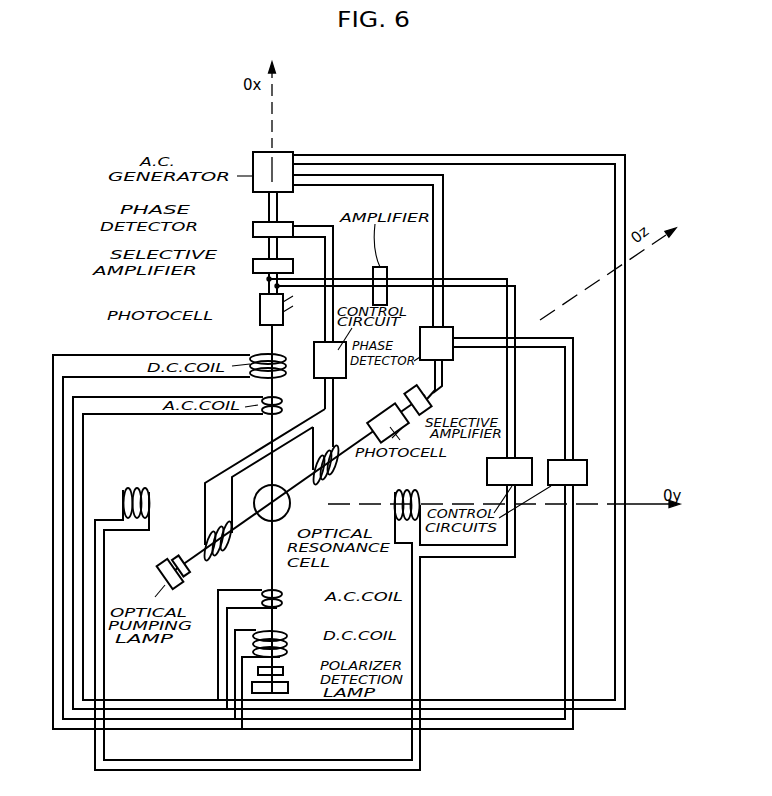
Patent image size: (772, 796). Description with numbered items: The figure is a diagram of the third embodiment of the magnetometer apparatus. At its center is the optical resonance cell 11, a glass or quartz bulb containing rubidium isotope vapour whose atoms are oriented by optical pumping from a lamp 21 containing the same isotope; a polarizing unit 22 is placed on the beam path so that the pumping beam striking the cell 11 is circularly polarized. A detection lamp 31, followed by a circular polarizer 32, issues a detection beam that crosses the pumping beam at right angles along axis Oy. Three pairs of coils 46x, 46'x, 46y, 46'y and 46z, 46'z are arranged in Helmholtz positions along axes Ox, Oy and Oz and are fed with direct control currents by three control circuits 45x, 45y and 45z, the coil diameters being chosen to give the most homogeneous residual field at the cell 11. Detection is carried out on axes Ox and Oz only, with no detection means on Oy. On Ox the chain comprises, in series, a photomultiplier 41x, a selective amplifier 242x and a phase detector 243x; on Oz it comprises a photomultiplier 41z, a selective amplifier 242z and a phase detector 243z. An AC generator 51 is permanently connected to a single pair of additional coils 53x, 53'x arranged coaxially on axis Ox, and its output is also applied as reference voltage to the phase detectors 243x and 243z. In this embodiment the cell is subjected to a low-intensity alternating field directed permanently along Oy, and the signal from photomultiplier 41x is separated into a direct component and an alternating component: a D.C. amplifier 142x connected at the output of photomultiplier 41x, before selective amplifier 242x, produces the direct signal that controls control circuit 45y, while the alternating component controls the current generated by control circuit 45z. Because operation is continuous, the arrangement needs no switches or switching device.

The AC generator 51 is at (253, 165).
The phase detector 243x is at (253, 231).
The selective amplifier 242x is at (253, 265).
The photomultiplier 41x is at (260, 303).
The coil 46x is at (253, 358).
The additional coil 53x is at (283, 402).
The D.C. amplifier 142x is at (381, 271).
The control circuit 45z is at (341, 370).
The phase detector 243z is at (420, 349).
The selective amplifier 242z is at (433, 410).
The photomultiplier 41z is at (397, 424).
The coil 46z is at (336, 476).
The coil 46'z is at (233, 540).
The optical resonance cell 11 is at (284, 511).
The control circuit 45y is at (487, 468).
The control circuit 45x is at (552, 461).
The coil 46y is at (413, 498).
The coil 46'y is at (149, 493).
The polarizing unit 22 is at (189, 568).
The lamp 21 is at (177, 587).
The additional coil 53'x is at (291, 598).
The coil 46'x is at (286, 643).
The circular polarizer 32 is at (287, 670).
The detection lamp 31 is at (289, 688).